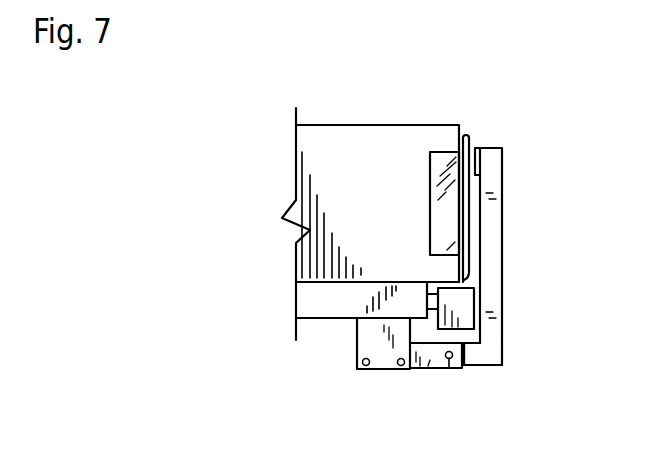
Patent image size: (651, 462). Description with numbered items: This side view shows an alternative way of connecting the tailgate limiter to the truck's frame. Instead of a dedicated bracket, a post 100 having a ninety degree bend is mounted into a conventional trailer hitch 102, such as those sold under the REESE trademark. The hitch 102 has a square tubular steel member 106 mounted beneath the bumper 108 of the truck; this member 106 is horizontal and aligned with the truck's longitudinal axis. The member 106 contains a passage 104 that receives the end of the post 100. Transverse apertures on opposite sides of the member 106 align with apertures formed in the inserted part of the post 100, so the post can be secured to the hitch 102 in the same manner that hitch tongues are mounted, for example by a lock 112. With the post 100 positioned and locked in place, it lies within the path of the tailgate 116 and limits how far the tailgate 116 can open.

The post 100 is at (497, 338).
The trailer hitch 102 is at (373, 385).
The passage 104 is at (470, 380).
The square tubular steel member 106 is at (429, 361).
The bumper 108 is at (468, 298).
The lock 112 is at (448, 369).
The tailgate 116 is at (465, 140).